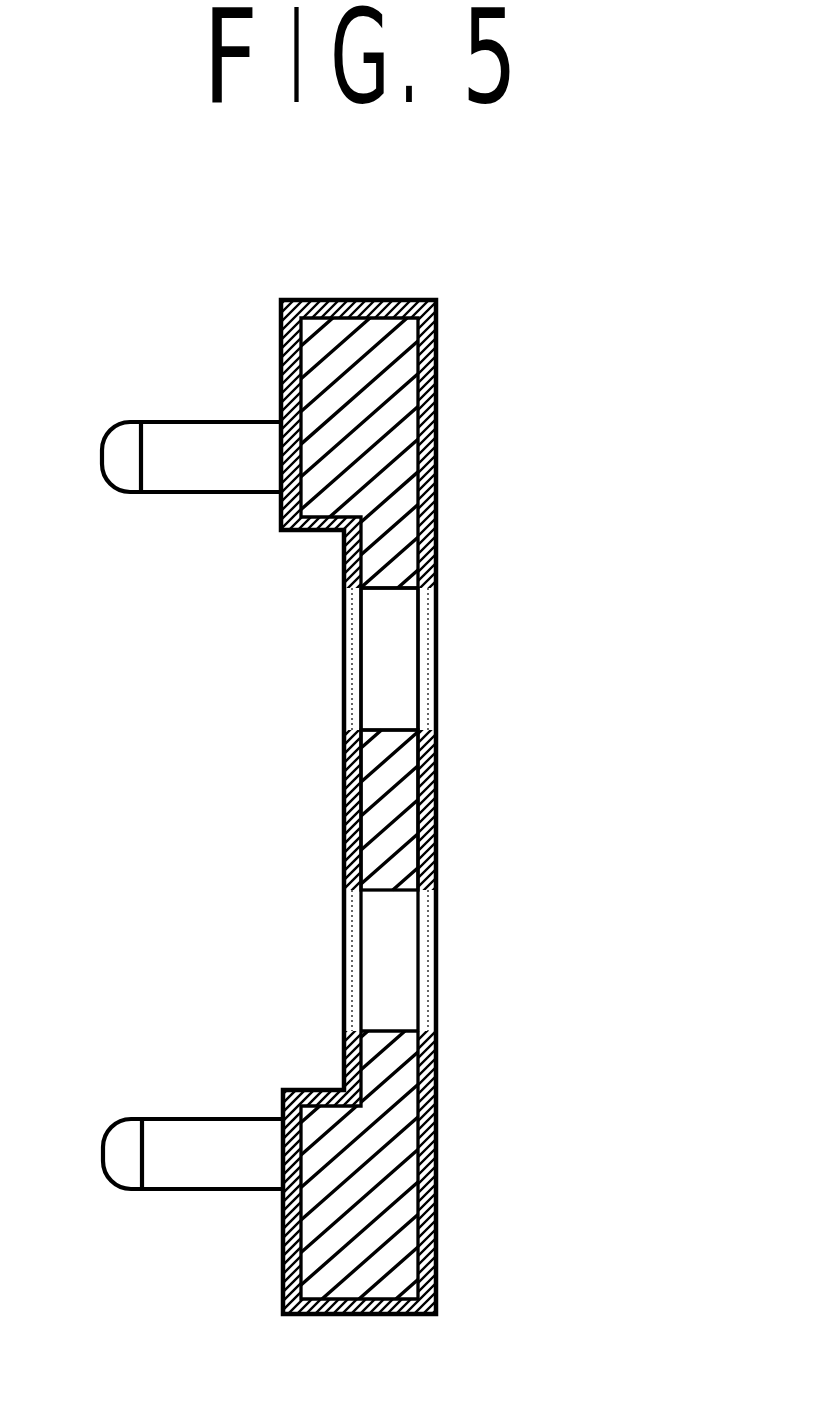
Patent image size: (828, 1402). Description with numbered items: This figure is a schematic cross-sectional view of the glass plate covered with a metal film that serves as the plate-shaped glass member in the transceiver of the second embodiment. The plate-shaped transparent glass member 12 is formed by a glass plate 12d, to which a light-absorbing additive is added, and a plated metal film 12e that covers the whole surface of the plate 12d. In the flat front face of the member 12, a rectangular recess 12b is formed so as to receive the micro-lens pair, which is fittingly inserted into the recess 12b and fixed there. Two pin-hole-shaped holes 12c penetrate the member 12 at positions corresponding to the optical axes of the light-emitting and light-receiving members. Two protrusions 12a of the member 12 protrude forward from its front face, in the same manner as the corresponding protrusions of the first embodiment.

The plate-shaped transparent glass member 12 is at (428, 285).
The protrusions 12a is at (194, 438).
The rectangular recess 12b is at (317, 1088).
The pin-hole-shaped holes 12c is at (401, 661).
The glass plate 12d is at (372, 819).
The plated metal film 12e is at (422, 807).